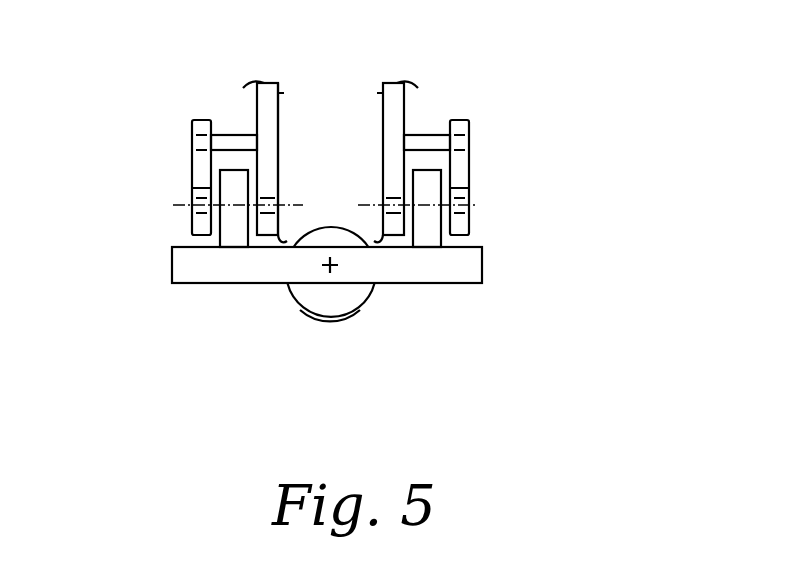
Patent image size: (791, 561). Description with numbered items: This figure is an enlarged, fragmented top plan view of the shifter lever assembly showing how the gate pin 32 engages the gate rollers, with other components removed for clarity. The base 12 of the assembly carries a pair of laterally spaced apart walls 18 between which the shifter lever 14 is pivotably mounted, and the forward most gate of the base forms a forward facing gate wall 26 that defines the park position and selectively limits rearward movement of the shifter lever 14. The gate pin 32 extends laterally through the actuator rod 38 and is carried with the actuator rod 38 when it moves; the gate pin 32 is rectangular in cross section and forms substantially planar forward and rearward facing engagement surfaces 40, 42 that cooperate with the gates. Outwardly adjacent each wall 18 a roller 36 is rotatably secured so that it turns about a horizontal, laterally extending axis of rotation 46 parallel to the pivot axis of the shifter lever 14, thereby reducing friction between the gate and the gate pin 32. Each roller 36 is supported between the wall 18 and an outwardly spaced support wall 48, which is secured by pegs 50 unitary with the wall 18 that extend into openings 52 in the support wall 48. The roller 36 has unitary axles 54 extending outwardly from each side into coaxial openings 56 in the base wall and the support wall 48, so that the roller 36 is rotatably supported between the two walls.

The base 12 is at (279, 119).
The shifter lever 14 is at (337, 317).
The wall 18 is at (257, 107).
The gate wall 26 is at (283, 240).
The gate pin 32 is at (423, 283).
The roller 36 is at (195, 187).
The actuator rod 38 is at (302, 310).
The forward facing engagement surface 40 is at (470, 283).
The rearward facing engagement surface 42 is at (482, 247).
The axis of rotation 46 is at (173, 205).
The support wall 48 is at (192, 152).
The pegs 50 is at (233, 132).
The openings 52 is at (207, 137).
The axles 54 is at (192, 188).
The coaxial openings 56 is at (386, 193).